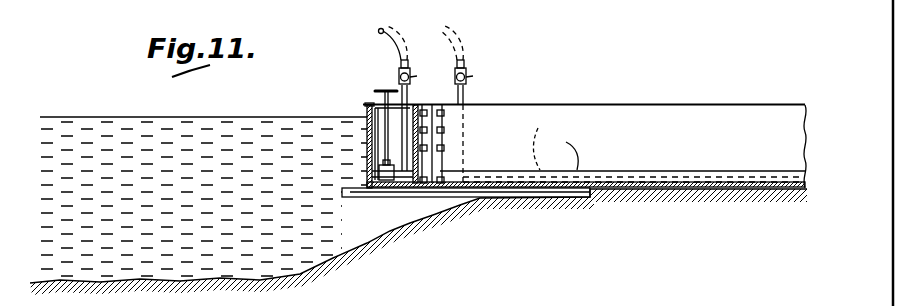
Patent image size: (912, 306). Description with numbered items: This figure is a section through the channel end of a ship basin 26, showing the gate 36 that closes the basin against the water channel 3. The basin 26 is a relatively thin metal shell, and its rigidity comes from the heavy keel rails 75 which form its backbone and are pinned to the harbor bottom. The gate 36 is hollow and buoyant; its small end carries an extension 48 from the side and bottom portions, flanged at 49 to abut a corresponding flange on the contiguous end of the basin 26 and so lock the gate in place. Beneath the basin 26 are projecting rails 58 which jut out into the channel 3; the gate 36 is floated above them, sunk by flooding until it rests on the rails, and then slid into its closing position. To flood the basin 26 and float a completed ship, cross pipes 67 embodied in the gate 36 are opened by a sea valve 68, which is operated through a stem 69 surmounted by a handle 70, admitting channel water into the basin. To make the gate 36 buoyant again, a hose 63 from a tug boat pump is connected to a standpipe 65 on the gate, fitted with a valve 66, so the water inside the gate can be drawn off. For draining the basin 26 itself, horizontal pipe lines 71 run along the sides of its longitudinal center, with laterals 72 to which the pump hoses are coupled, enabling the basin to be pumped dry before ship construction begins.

The water channel 3 is at (134, 121).
The basin 26 is at (548, 105).
The gate 36 is at (367, 120).
The extension 48 is at (423, 186).
The flange 49 is at (444, 150).
The projecting rails 58 is at (363, 188).
The hose 63 is at (406, 62).
The standpipe 65 is at (410, 95).
The valve 66 is at (408, 75).
The cross pipes 67 is at (372, 164).
The sea valve 68 is at (385, 164).
The stem 69 is at (370, 108).
The handle 70 is at (383, 97).
The horizontal pipe lines 71 is at (549, 143).
The laterals 72 is at (463, 172).
The keel rails 75 is at (559, 151).